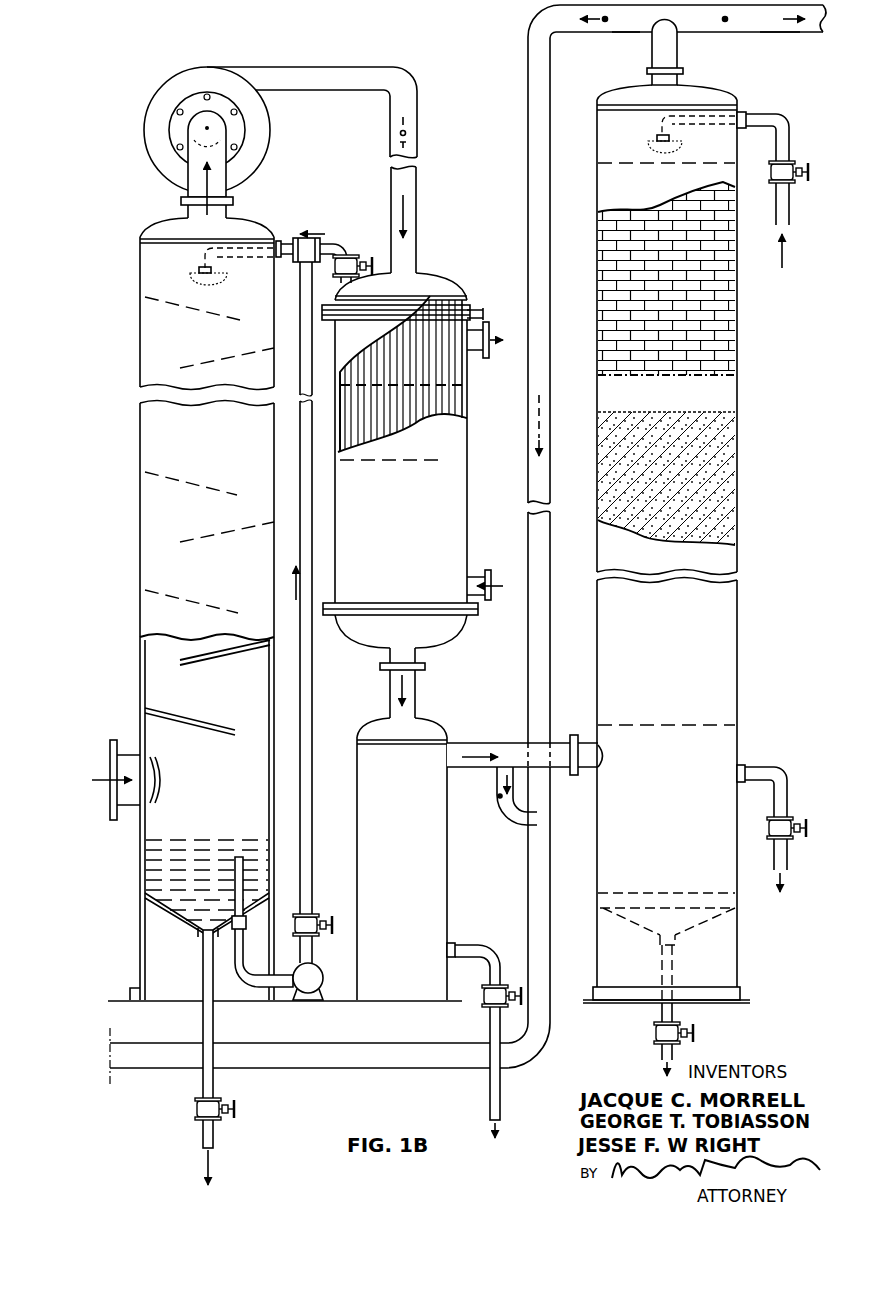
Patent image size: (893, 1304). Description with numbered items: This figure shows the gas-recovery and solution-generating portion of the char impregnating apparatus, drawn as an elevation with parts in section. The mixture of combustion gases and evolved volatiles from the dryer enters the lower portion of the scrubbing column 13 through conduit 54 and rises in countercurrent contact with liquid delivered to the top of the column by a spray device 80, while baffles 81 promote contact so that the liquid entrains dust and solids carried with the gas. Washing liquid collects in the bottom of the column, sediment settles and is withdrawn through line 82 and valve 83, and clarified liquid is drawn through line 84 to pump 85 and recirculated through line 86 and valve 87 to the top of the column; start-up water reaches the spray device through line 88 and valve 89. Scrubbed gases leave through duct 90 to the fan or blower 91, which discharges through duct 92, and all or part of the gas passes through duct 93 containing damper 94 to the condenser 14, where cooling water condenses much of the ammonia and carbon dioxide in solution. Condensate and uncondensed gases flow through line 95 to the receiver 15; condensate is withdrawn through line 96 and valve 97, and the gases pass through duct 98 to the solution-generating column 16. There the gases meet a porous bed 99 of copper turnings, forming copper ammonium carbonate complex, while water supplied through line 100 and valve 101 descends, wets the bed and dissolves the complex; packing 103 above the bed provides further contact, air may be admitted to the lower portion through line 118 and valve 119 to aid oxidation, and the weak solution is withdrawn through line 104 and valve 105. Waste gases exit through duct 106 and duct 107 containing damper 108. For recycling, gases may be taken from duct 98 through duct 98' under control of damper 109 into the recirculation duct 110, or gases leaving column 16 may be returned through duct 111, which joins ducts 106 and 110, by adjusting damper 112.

The scrubbing column 13 is at (264, 609).
The condenser 14 is at (471, 437).
The receiver 15 is at (440, 838).
The solution-generating column 16 is at (687, 544).
The conduit 54 is at (116, 792).
The spray device 80 is at (222, 282).
The baffles 81 is at (213, 492).
The line 82 is at (214, 1090).
The valve 83 is at (218, 1116).
The line 84 is at (238, 948).
The pump 85 is at (319, 973).
The line 86 is at (313, 956).
The valve 87 is at (310, 921).
The line 88 is at (325, 246).
The valve 89 is at (357, 262).
The duct 90 is at (215, 178).
The fan or blower 91 is at (262, 147).
The duct 92 is at (338, 70).
The duct 93 is at (417, 127).
The damper 94 is at (410, 142).
The line 95 is at (412, 696).
The line 96 is at (480, 953).
The valve 97 is at (497, 984).
The duct 98 is at (525, 748).
The duct 98' is at (494, 796).
The porous bed 99 is at (740, 470).
The line 100 is at (784, 214).
The valve 101 is at (784, 168).
The packing 103 is at (706, 288).
The line 104 is at (663, 1011).
The valve 105 is at (658, 1030).
The duct 106 is at (676, 63).
The duct 107 is at (775, 33).
The damper 108 is at (727, 22).
The damper 109 is at (499, 796).
The recirculation duct 110 is at (527, 183).
The duct 111 is at (626, 32).
The damper 112 is at (604, 22).
The line 118 is at (789, 867).
The valve 119 is at (784, 820).